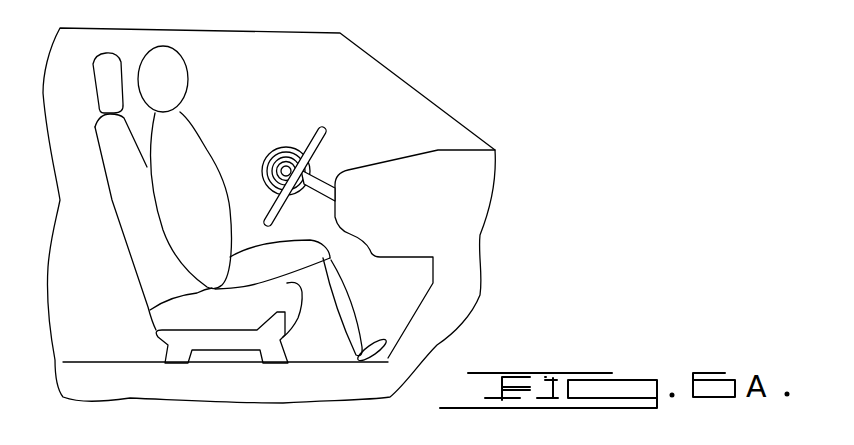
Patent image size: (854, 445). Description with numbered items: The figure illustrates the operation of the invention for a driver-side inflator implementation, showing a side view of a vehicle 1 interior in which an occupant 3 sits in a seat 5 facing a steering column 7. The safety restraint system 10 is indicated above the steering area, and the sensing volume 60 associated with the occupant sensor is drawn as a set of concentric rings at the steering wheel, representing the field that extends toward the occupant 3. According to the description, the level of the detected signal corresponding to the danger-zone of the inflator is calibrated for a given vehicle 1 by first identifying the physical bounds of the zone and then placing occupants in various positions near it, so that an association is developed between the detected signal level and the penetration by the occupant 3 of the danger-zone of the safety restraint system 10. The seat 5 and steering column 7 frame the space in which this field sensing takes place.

The vehicle 1 is at (438, 107).
The occupant 3 is at (173, 68).
The seat 5 is at (130, 246).
The steering column 7 is at (324, 134).
The safety restraint system 10 is at (292, 124).
The sensing volume 60 is at (269, 155).